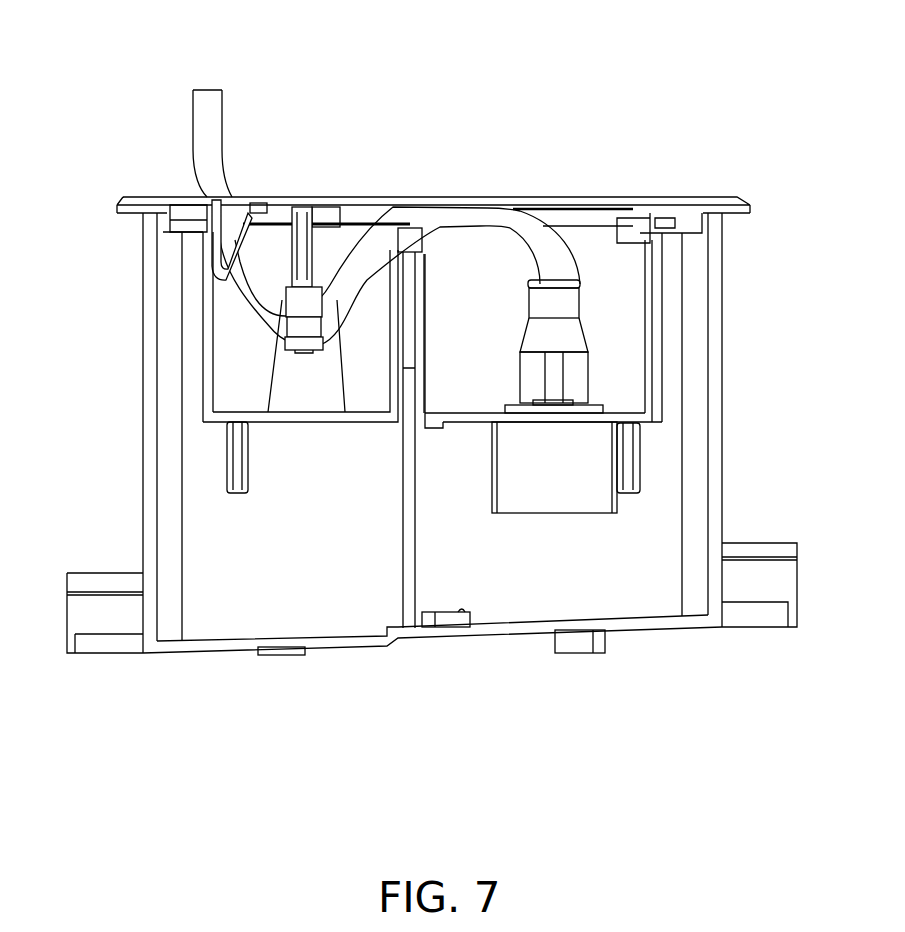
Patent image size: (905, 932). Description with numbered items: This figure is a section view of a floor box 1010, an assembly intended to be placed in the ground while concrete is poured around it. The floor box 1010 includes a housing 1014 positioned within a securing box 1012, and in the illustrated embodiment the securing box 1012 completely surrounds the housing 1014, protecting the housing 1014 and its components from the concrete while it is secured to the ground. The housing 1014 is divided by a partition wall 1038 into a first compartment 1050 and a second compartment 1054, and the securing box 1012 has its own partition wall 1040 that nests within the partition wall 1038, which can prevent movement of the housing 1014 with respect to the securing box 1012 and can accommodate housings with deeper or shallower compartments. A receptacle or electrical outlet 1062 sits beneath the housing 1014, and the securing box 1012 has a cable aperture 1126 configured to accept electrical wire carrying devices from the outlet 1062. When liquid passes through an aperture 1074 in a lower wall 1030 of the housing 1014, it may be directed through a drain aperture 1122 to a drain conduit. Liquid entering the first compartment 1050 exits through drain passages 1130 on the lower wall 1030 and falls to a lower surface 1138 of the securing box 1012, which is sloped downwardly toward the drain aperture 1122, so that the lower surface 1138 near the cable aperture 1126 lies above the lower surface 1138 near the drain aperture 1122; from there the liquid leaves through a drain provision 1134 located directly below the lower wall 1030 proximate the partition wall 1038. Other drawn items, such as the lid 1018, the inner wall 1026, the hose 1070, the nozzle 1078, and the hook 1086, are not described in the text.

The floor box 1010 is at (125, 52).
The securing box 1012 is at (732, 392).
The housing 1014 is at (201, 372).
The lid 1018 is at (566, 205).
The inner wall 1026 is at (217, 327).
The lower wall 1030 is at (370, 415).
The partition wall 1038 is at (422, 278).
The partition wall of the securing box 1040 is at (405, 550).
The first compartment 1050 is at (590, 251).
The second compartment 1054 is at (336, 249).
The electrical outlet 1062 is at (554, 467).
The hose 1070 is at (442, 215).
The aperture 1074 is at (272, 414).
The nozzle 1078 is at (300, 343).
The hook 1086 is at (273, 267).
The drain aperture 1122 is at (80, 612).
The cable aperture 1126 is at (800, 583).
The drain passages 1130 is at (425, 433).
The drain provision 1134 is at (445, 612).
The lower surface 1138 is at (638, 622).